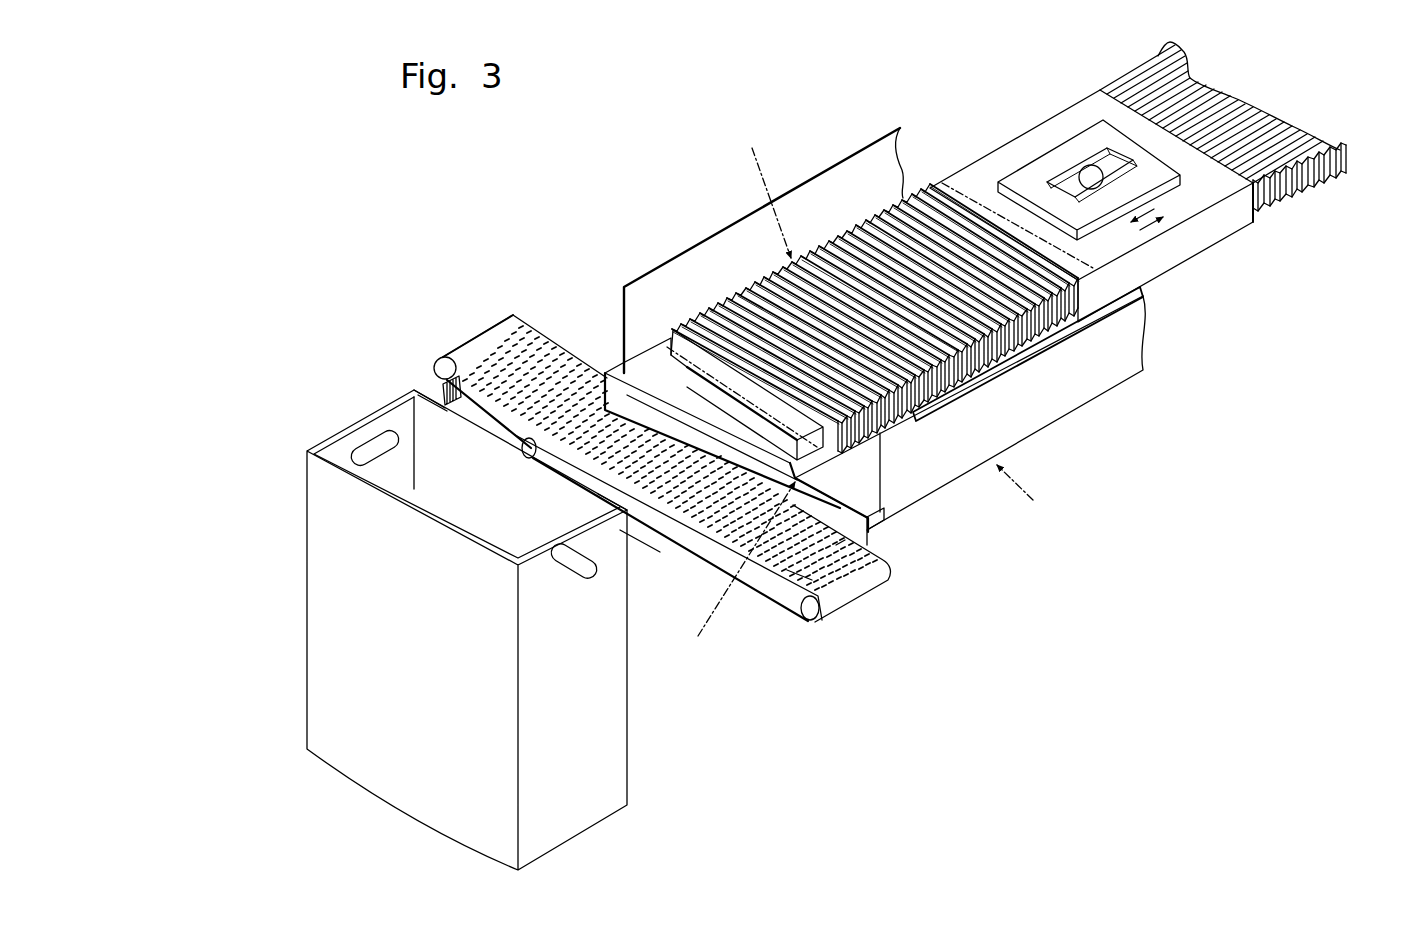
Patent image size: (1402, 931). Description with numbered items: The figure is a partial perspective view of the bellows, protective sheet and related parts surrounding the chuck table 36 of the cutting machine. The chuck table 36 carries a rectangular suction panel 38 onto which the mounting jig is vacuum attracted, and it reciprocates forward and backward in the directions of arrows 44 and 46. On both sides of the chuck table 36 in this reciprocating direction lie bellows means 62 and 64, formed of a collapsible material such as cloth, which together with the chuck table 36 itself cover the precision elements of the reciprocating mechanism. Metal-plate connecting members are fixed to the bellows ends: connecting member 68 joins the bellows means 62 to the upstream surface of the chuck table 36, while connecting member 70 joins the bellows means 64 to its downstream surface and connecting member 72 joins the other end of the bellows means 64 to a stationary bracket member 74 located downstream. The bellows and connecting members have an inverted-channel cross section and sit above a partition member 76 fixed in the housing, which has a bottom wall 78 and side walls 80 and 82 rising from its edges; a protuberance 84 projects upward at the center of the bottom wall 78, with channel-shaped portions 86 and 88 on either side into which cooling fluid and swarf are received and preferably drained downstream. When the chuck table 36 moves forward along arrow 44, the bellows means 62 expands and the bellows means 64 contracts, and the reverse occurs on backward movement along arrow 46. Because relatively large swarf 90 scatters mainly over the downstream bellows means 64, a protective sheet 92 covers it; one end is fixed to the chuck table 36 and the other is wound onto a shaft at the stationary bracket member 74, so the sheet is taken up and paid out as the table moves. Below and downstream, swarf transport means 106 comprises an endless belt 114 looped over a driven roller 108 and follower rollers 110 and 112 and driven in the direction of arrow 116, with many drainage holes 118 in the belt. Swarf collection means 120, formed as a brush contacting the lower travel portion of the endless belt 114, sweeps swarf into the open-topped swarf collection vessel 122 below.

The chuck table 36 is at (1210, 253).
The suction panel 38 is at (1038, 152).
The arrow 44 is at (1132, 222).
The arrow 46 is at (1148, 222).
The bellows means 62 is at (1322, 173).
The bellows means 64 is at (850, 488).
The connecting member 68 is at (1258, 210).
The connecting member 70 is at (1062, 347).
The connecting member 72 is at (836, 545).
The stationary bracket member 74 is at (732, 576).
The partition member 76 is at (1031, 493).
The bottom wall 78 is at (795, 479).
The side wall 80 is at (1053, 400).
The side wall 82 is at (733, 223).
The protuberance 84 is at (602, 440).
The channel-shaped portion 86 is at (874, 487).
The channel-shaped portion 88 is at (656, 342).
The swarf 90 is at (910, 262).
The protective sheet 92 is at (758, 189).
The swarf transport means 106 is at (482, 330).
The driven roller 108 is at (442, 360).
The follower roller 110 is at (808, 620).
The follower roller 112 is at (521, 452).
The endless belt 114 is at (735, 548).
The arrow 116 is at (657, 534).
The drainage holes 118 is at (812, 580).
The swarf collection means 120 is at (440, 388).
The swarf collection vessel 122 is at (306, 637).